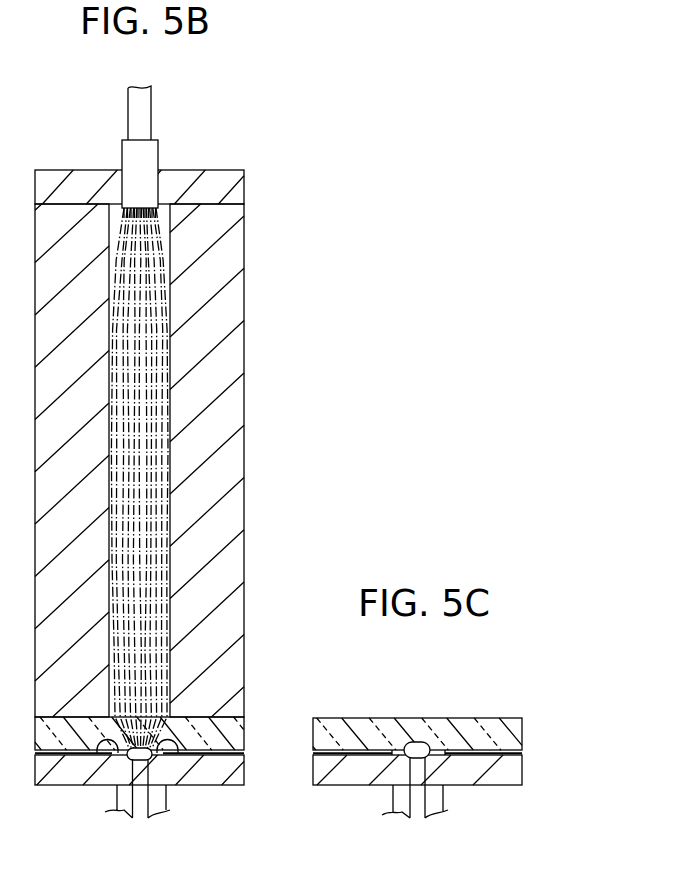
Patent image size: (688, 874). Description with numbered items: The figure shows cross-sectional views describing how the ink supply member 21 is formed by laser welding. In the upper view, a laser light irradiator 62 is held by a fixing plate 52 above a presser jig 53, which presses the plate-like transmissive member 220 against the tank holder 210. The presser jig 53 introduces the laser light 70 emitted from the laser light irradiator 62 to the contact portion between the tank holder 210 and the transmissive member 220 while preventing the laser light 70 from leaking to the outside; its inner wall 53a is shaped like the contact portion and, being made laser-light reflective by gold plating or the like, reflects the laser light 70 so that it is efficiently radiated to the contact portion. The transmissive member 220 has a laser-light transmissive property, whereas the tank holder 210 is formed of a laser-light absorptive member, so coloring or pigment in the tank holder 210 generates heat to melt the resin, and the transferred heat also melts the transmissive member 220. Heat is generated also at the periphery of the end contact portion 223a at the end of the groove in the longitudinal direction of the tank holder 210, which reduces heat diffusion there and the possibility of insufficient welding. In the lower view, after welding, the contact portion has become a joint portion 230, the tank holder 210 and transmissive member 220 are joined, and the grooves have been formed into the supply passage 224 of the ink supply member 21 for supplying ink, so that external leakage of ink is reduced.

In FIG. 5B, the fixing plate 52 is at (240, 190).
In FIG. 5B, the presser jig 53 is at (240, 303).
In FIG. 5B, the inner wall 53a is at (109, 233).
In FIG. 5B, the laser light irradiator 62 is at (150, 163).
In FIG. 5B, the laser light 70 is at (170, 400).
In FIG. 5B, the transmissive member 220 is at (235, 730).
In FIG. 5C, the transmissive member 220 is at (512, 741).
In FIG. 5B, the tank holder 210 is at (213, 777).
In FIG. 5C, the tank holder 210 is at (520, 767).
In FIG. 5B, the end contact portion 223a is at (100, 752).
In FIG. 5C, the supply passage 224 is at (416, 744).
In FIG. 5C, the joint portion 230 is at (441, 750).
In FIG. 5C, the ink supply member 21 is at (483, 791).